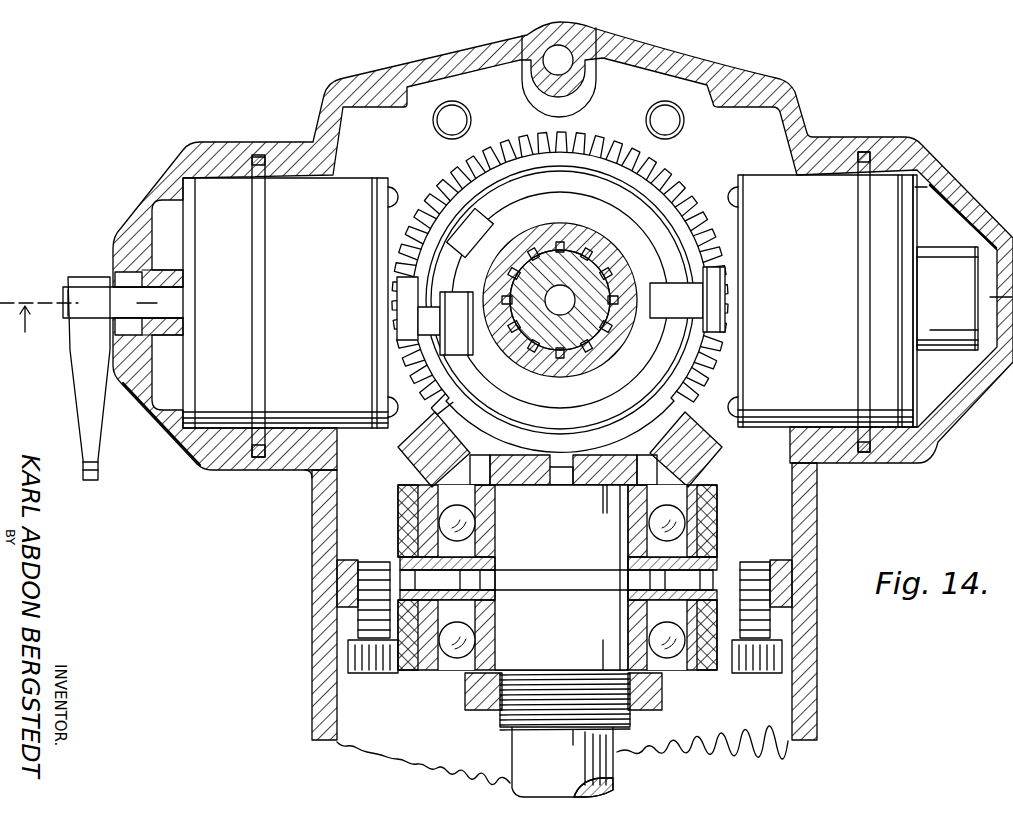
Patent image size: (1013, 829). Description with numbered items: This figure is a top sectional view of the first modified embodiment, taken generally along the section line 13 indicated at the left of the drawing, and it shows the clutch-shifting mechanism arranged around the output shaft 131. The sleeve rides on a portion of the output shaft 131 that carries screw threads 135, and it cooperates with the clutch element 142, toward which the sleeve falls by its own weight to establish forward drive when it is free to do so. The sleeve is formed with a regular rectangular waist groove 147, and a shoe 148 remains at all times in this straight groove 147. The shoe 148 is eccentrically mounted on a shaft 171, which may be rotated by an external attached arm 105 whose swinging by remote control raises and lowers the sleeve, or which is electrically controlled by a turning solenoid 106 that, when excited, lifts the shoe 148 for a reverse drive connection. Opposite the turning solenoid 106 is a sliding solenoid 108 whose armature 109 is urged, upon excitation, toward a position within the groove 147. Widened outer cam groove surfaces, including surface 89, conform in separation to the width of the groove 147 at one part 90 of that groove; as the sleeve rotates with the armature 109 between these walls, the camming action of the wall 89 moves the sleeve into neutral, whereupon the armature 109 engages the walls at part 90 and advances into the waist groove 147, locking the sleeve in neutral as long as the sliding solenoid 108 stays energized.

The section line 13 is at (39, 306).
The outer cam groove surface 89 is at (620, 195).
The part of the groove 90 is at (447, 260).
The arm 105 is at (76, 416).
The turning solenoid 106 is at (350, 428).
The sliding solenoid 108 is at (788, 174).
The armature 109 is at (660, 283).
The output shaft 131 is at (588, 250).
The screw threads 135 is at (548, 250).
The clutch element 142 is at (665, 172).
The waist groove 147 is at (490, 233).
The shoe 148 is at (470, 348).
The shaft 171 is at (420, 292).